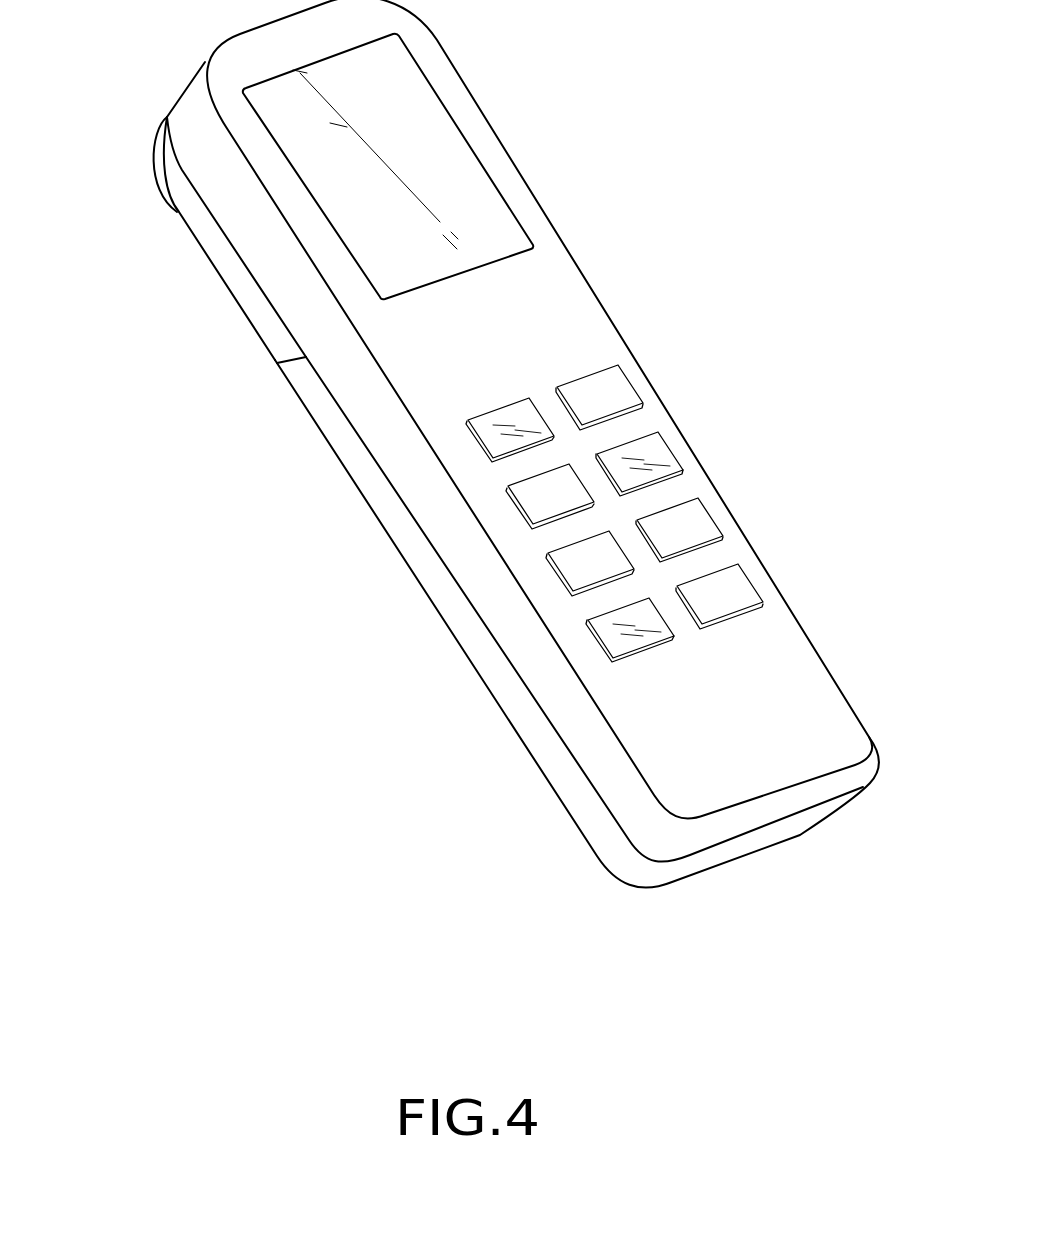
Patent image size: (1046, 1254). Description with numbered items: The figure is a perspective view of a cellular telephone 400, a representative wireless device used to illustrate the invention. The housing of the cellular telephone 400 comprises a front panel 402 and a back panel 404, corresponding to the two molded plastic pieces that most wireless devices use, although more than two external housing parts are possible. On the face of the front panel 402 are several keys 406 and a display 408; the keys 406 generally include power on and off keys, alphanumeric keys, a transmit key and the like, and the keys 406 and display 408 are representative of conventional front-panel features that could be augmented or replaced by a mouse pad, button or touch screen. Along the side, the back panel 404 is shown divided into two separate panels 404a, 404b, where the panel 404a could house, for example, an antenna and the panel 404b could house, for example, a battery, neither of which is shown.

The cellular telephone 400 is at (436, 692).
The front panel 402 is at (550, 307).
The back panel 404 is at (322, 400).
The panel 404a is at (176, 213).
The panel 404b is at (390, 538).
The key 406 is at (703, 515).
The display 408 is at (438, 118).